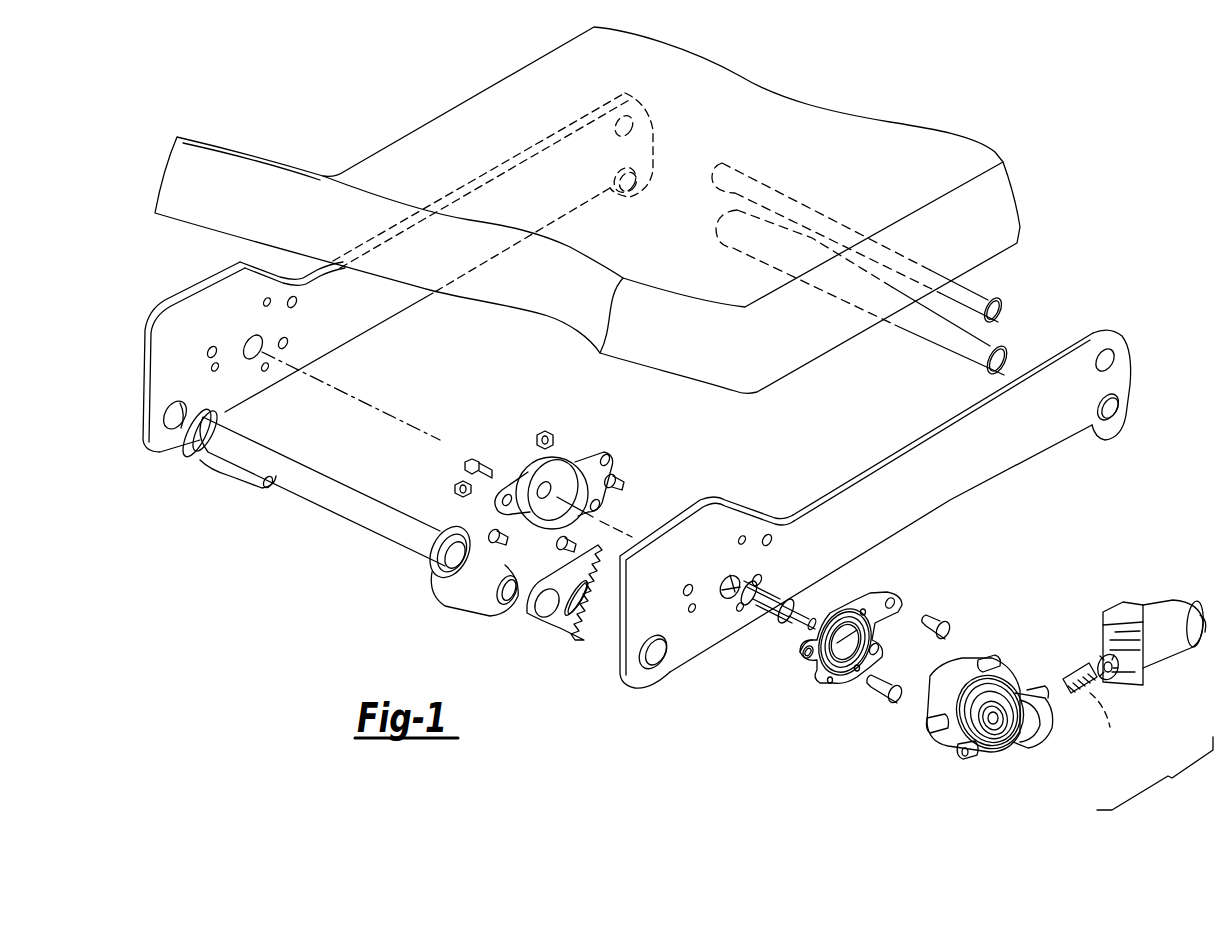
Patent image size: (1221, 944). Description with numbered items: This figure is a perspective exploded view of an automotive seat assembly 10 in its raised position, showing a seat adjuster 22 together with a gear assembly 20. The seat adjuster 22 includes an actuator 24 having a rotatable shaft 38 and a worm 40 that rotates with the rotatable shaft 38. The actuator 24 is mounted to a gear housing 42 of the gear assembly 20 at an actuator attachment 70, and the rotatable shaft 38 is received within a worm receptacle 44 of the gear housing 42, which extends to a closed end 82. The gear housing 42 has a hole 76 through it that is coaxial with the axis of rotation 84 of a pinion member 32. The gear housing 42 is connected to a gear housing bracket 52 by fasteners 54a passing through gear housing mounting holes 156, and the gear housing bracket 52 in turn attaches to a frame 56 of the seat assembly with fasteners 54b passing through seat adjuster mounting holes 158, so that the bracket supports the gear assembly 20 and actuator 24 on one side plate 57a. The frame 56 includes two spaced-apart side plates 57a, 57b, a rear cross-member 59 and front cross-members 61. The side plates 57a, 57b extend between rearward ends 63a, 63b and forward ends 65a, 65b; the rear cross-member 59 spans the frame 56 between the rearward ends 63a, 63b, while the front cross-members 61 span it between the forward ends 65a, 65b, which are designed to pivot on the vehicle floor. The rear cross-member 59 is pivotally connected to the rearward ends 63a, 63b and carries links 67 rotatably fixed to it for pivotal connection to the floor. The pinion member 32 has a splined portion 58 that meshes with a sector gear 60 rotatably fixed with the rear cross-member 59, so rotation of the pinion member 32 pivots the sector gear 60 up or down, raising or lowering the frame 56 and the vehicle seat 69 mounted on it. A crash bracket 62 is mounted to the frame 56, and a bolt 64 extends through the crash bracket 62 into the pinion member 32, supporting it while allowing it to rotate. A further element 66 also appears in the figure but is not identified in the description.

The automotive seat assembly 10 is at (390, 540).
The gear assembly 20 is at (1036, 677).
The seat adjuster 22 is at (1155, 773).
The actuator 24 is at (1118, 646).
The pinion member 32 is at (831, 635).
The rotatable shaft 38 is at (1098, 658).
The worm 40 is at (1072, 672).
The gear housing 42 is at (979, 732).
The worm receptacle 44 is at (1008, 732).
The gear housing bracket 52 is at (863, 635).
The fasteners 54a is at (614, 476).
The fasteners 54b is at (940, 634).
The frame 56 is at (902, 412).
The side plate 57a is at (907, 503).
The side plate 57b is at (338, 323).
The splined portion 58 is at (781, 590).
The rear cross-member 59 is at (318, 497).
The sector gear 60 is at (556, 624).
The front cross-members 61 is at (961, 346).
The crash bracket 62 is at (572, 440).
The rearward end 63a is at (604, 712).
The rearward end 63b is at (151, 460).
The bolt 64 is at (482, 458).
The forward end 65a is at (1075, 328).
The forward end 65b is at (657, 122).
The axis 66 is at (1103, 720).
The links 67 is at (220, 474).
The vehicle seat 69 is at (998, 188).
The actuator attachment 70 is at (1040, 730).
The hole 76 is at (1004, 724).
The closed end 82 is at (972, 757).
The axis of rotation 84 is at (626, 525).
The gear housing mounting holes 156 is at (871, 597).
The seat adjuster mounting holes 158 is at (898, 603).